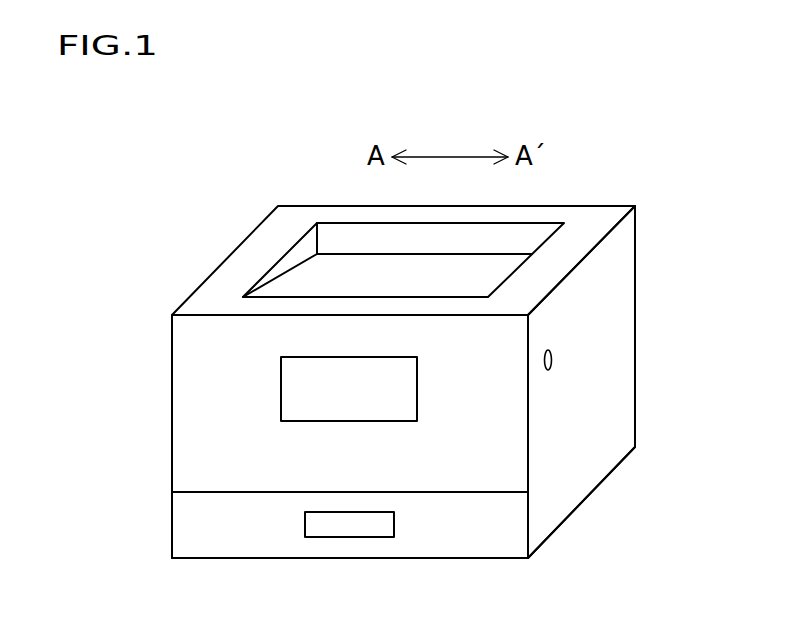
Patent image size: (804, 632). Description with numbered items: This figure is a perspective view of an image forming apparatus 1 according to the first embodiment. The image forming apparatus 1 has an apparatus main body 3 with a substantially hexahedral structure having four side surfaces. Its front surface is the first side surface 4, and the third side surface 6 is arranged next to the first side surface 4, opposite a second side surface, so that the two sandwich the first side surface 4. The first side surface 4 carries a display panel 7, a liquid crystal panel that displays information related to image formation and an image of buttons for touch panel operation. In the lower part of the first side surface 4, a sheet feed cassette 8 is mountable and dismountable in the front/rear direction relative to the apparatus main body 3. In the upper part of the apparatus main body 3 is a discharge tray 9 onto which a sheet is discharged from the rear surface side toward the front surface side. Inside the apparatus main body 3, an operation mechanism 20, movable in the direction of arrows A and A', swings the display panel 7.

The image forming apparatus 1 is at (640, 151).
The apparatus main body 3 is at (656, 243).
The first side surface 4 is at (207, 399).
The third side surface 6 is at (607, 302).
The display panel 7 is at (403, 393).
The sheet feed cassette 8 is at (447, 533).
The discharge tray 9 is at (308, 277).
The operation mechanism 20 is at (552, 362).